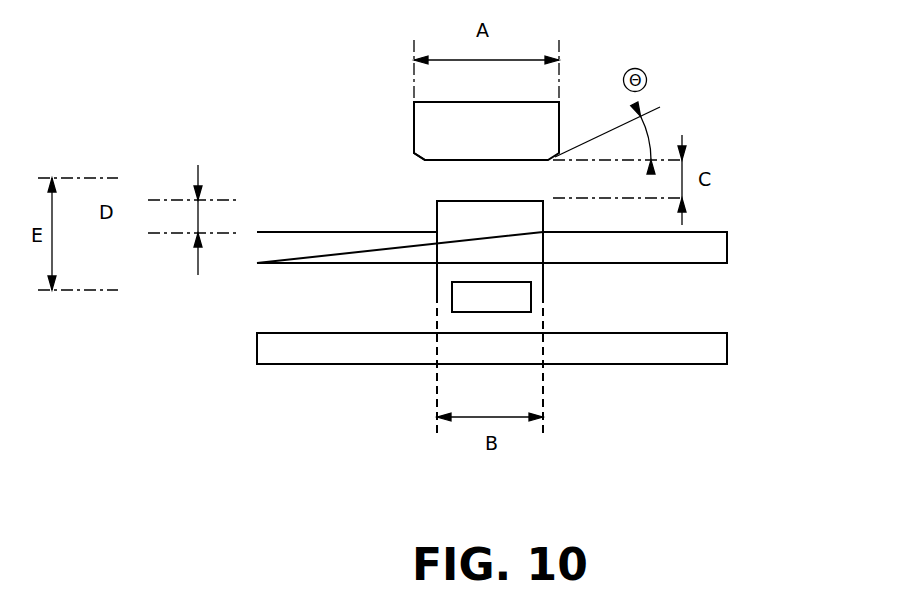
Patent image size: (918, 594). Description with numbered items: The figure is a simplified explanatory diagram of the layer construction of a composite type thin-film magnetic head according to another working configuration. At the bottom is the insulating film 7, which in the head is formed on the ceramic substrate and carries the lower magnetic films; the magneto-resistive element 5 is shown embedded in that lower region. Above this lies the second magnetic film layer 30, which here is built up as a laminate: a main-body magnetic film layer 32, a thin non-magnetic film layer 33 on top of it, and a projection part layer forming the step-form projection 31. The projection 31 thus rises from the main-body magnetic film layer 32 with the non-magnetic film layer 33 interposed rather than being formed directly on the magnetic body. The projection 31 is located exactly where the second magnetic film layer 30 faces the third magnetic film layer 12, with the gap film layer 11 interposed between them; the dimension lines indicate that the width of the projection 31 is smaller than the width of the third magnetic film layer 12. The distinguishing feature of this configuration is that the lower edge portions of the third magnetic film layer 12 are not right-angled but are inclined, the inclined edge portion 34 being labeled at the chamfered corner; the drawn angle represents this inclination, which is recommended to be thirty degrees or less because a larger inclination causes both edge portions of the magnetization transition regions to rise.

The third magnetic film layer 12 is at (428, 130).
The punch chamfered edge 34 is at (415, 155).
The gap film layer 11 is at (435, 180).
The projection 31 is at (453, 218).
The magneto-resistive element 5 is at (463, 300).
The insulating film 7 is at (718, 348).
The main-body magnetic film layer 32 is at (718, 247).
The non-magnetic film layer 33 is at (713, 229).
The second magnetic film layer 30 is at (770, 170).